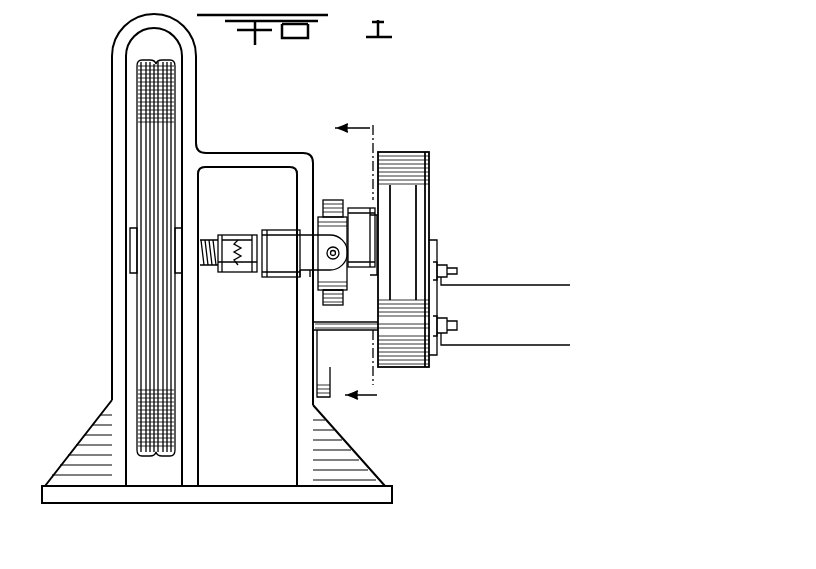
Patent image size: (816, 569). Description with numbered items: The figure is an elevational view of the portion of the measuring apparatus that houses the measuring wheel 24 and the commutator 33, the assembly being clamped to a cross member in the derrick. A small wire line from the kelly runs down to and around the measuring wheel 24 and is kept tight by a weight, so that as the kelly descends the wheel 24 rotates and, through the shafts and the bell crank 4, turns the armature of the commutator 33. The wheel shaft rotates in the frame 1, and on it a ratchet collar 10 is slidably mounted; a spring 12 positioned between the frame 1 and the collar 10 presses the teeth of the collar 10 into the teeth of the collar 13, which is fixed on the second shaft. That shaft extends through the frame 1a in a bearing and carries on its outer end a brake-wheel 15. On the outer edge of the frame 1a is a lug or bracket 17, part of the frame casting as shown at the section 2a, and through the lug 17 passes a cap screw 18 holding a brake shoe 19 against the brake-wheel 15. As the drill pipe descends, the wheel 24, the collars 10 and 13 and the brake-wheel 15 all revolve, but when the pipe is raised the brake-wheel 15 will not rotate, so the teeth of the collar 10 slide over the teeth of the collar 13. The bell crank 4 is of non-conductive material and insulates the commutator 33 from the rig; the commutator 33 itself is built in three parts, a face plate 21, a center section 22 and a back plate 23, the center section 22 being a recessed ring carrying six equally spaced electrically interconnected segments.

The frame 1 is at (112, 190).
The frame 1a is at (256, 153).
The measuring wheel 24 is at (137, 318).
The spring 12 is at (207, 266).
The collar 13 is at (244, 272).
The ratchet collar 10 is at (231, 236).
The lug or bracket 17 is at (306, 226).
The cap screw 18 is at (312, 273).
The brake shoe 19 is at (343, 282).
The brake-wheel 15 is at (327, 200).
The bell crank 4 is at (362, 208).
The section line 2a is at (367, 263).
The commutator 33 is at (418, 150).
The face plate 21 is at (429, 186).
The center section 22 is at (410, 204).
The back plate 23 is at (385, 221).